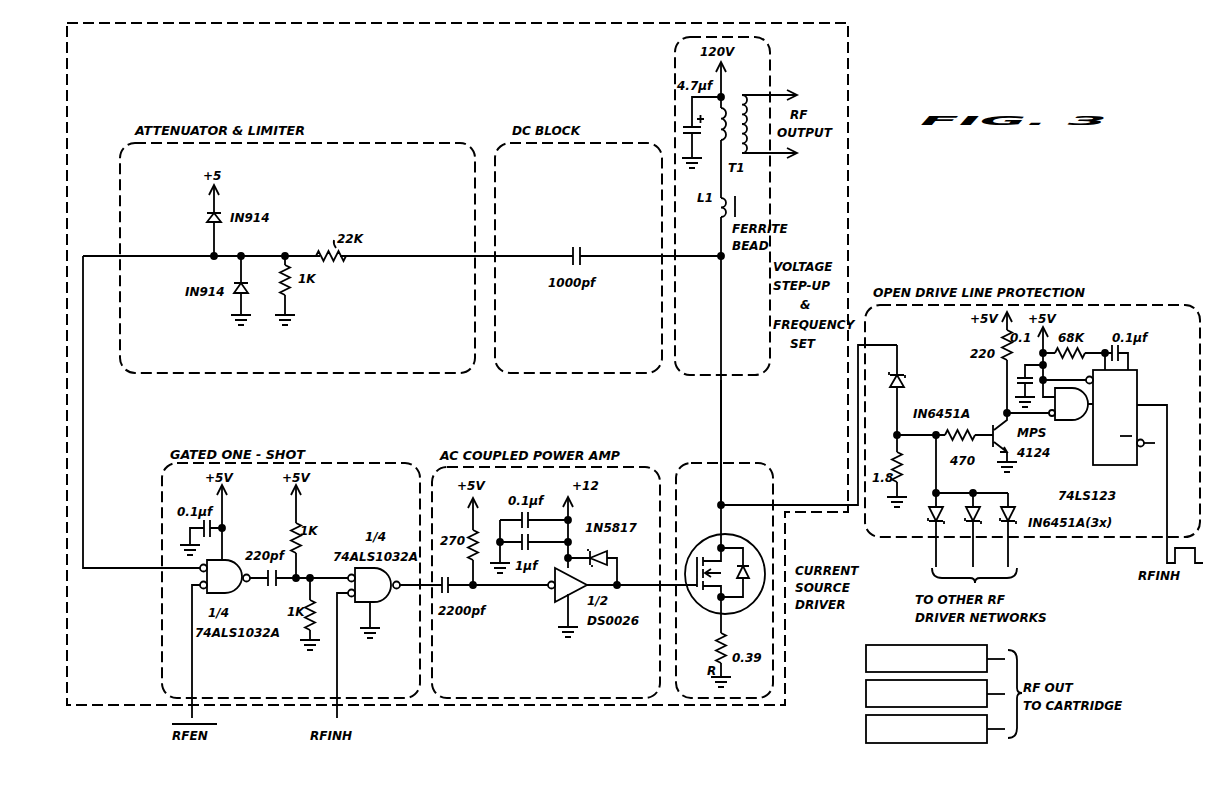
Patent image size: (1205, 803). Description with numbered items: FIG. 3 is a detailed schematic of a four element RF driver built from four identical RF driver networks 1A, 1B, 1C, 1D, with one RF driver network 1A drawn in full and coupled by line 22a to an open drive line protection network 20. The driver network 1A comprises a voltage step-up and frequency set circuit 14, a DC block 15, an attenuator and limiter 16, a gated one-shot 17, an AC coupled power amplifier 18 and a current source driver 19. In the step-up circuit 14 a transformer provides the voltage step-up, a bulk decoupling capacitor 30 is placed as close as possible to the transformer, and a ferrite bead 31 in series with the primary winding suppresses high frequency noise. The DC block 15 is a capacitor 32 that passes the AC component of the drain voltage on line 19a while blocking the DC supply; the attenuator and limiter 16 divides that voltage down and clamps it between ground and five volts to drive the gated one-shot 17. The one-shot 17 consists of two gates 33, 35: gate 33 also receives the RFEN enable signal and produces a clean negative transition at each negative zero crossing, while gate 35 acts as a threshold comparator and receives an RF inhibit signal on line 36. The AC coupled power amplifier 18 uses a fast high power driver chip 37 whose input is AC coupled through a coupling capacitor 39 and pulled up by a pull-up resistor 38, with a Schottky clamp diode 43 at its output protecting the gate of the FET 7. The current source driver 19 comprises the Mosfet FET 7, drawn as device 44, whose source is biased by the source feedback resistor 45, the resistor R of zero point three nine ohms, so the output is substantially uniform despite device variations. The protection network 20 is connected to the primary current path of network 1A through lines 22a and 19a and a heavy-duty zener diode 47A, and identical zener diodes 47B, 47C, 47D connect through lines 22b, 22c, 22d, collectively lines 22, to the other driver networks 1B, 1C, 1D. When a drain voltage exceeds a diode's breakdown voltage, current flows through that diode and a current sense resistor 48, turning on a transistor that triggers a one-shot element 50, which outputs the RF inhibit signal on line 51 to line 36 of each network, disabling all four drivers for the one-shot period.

The RF driver network 1A is at (850, 232).
The RF driver network 1B is at (865, 660).
The RF driver network 1C is at (865, 695).
The RF driver network 1D is at (865, 730).
The FET 7 is at (735, 537).
The voltage step-up and frequency set circuit 14 is at (767, 368).
The DC block 15 is at (602, 143).
The attenuator and limiter 16 is at (388, 143).
The gated one-shot 17 is at (347, 463).
The AC coupled power amplifier 18 is at (625, 467).
The current source driver 19 is at (757, 463).
The line 19a is at (722, 435).
The open drive line protection network 20 is at (1117, 305).
The lines 22 is at (930, 580).
The line 22a is at (792, 500).
The line 22b is at (934, 553).
The line 22c is at (973, 553).
The line 22d is at (1011, 553).
The capacitor 30 is at (683, 130).
The ferrite bead 31 is at (735, 197).
The capacitor 32 is at (583, 249).
The gate 33 is at (230, 586).
The gate 35 is at (379, 594).
The line 36 is at (338, 679).
The power driver chip 37 is at (555, 593).
The pull-up resistor 38 is at (471, 520).
The coupling capacitor 39 is at (452, 581).
The Schottky clamp diode 43 is at (608, 550).
The power MOSFET 44 is at (709, 620).
The source resistor 45 is at (728, 640).
The zener diode 47A is at (905, 380).
The zener diode 47B is at (929, 522).
The zener diode 47C is at (967, 506).
The zener diode 47D is at (1015, 512).
The current sense resistor 48 is at (895, 455).
The one-shot element 50 is at (1125, 390).
The line 51 is at (1167, 492).